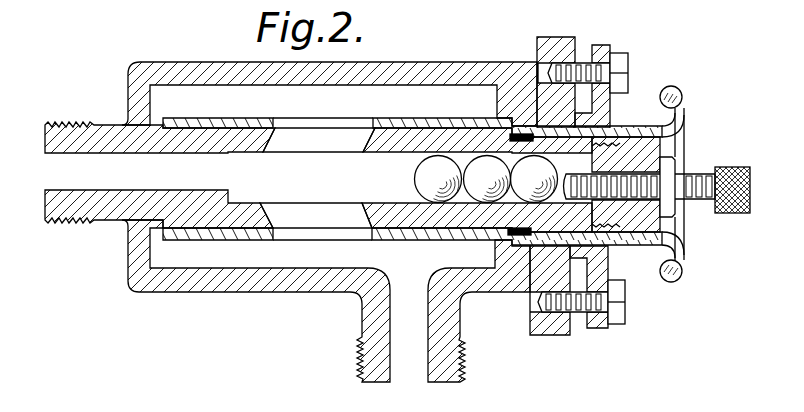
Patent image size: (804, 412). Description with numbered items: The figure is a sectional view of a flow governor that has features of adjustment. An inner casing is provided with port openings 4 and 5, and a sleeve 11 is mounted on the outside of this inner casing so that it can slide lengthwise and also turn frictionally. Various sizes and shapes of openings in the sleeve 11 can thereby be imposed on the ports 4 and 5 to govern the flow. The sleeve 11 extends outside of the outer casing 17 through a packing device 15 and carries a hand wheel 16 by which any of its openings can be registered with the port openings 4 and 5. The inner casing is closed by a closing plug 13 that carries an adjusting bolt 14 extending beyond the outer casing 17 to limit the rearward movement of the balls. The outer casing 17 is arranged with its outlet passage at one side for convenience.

The port opening 4 is at (345, 140).
The port opening 5 is at (293, 213).
The sleeve 11 is at (413, 130).
The closing plug 13 is at (657, 152).
The adjusting bolt 14 is at (700, 202).
The packing device 15 is at (520, 120).
The hand wheel 16 is at (677, 92).
The outer casing 17 is at (495, 292).